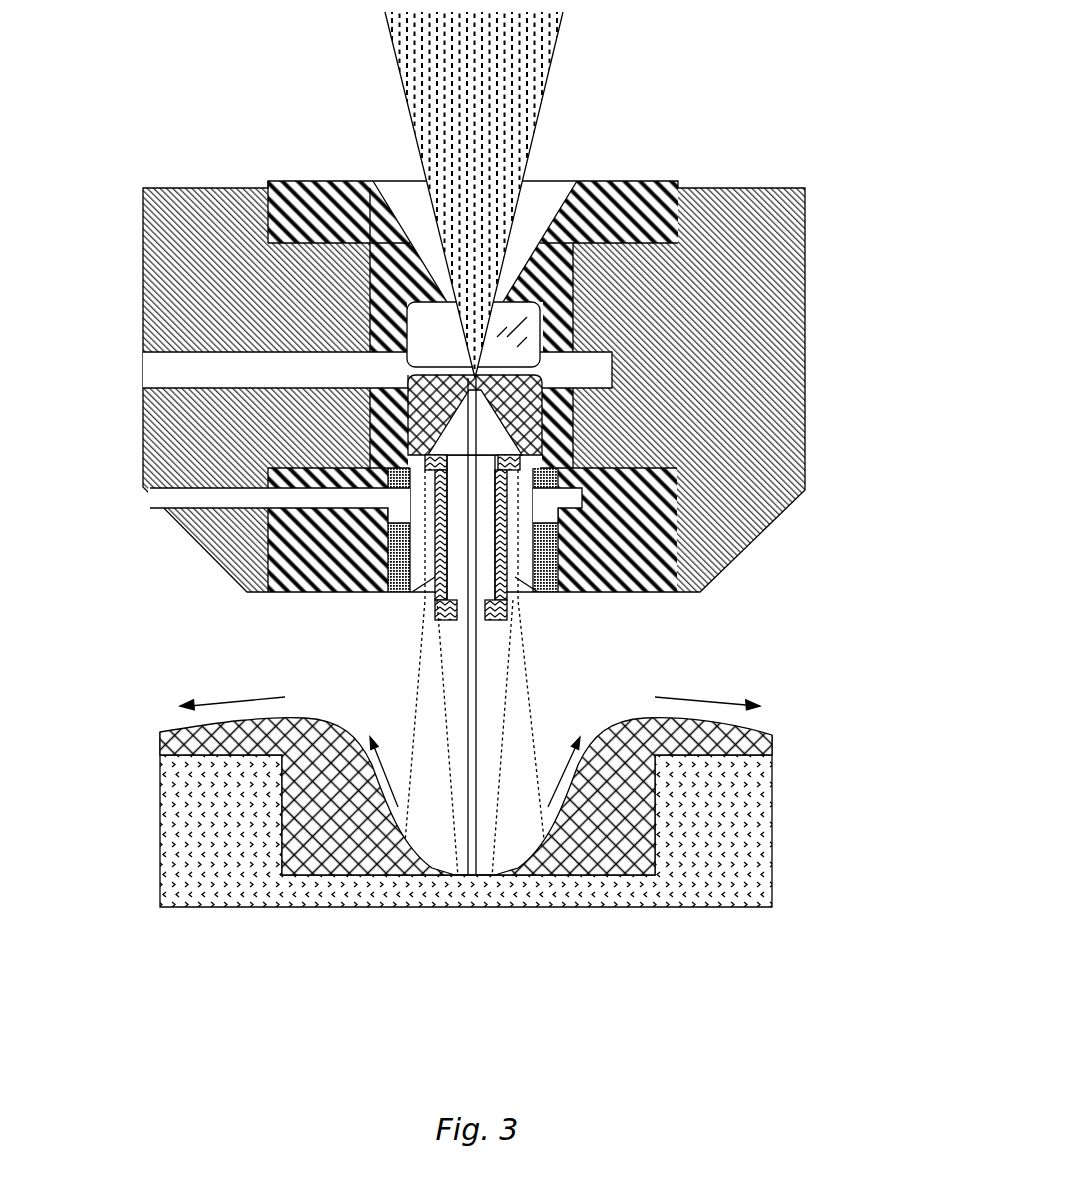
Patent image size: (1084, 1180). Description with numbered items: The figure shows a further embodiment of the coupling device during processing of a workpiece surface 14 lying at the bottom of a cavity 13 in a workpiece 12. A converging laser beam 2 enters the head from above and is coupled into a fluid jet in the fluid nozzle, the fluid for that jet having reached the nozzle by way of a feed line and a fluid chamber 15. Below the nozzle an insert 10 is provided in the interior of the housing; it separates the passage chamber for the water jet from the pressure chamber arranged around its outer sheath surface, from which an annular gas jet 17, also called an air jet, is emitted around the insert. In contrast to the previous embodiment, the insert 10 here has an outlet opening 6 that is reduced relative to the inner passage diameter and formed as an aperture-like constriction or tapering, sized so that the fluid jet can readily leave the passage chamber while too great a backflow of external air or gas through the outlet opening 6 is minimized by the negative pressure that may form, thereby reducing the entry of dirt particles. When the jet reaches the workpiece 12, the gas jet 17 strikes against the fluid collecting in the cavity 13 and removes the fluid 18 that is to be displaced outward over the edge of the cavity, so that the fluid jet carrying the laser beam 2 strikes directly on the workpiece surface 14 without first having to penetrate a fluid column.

The laser beam 2 is at (475, 327).
The fluid chamber 15 is at (555, 372).
The insert 10 is at (608, 592).
The outlet opening 6 is at (480, 620).
The gas jet 17 is at (430, 745).
The fluid 18 is at (320, 800).
The cavity 13 is at (545, 760).
The workpiece 12 is at (713, 813).
The workpiece surface 14 is at (485, 882).